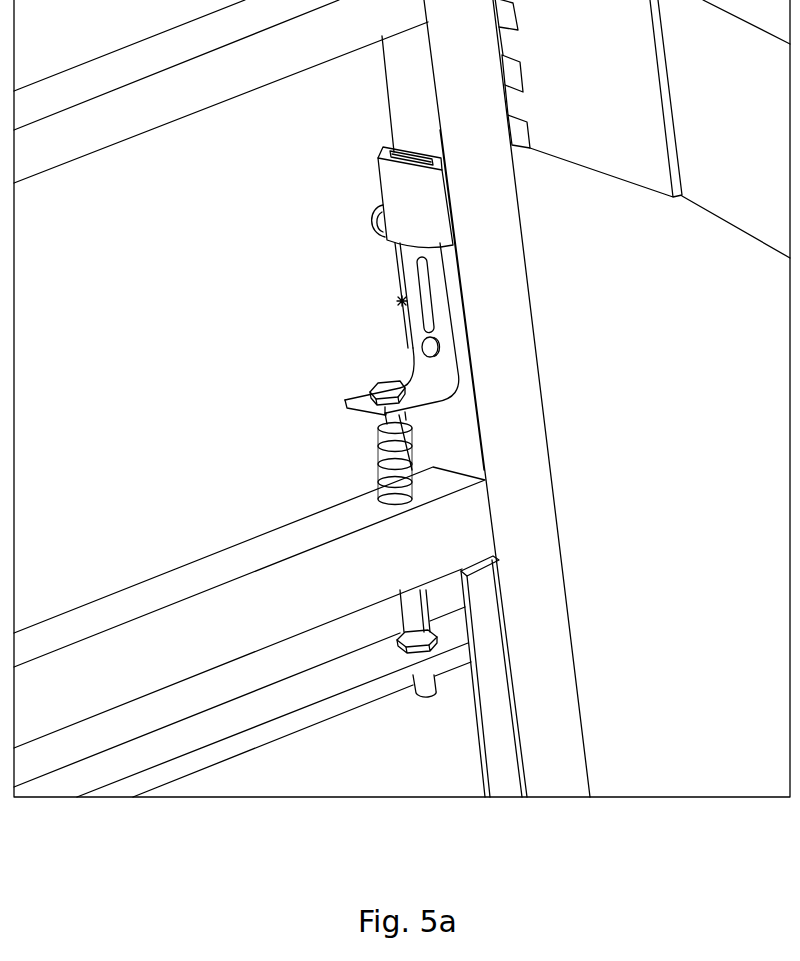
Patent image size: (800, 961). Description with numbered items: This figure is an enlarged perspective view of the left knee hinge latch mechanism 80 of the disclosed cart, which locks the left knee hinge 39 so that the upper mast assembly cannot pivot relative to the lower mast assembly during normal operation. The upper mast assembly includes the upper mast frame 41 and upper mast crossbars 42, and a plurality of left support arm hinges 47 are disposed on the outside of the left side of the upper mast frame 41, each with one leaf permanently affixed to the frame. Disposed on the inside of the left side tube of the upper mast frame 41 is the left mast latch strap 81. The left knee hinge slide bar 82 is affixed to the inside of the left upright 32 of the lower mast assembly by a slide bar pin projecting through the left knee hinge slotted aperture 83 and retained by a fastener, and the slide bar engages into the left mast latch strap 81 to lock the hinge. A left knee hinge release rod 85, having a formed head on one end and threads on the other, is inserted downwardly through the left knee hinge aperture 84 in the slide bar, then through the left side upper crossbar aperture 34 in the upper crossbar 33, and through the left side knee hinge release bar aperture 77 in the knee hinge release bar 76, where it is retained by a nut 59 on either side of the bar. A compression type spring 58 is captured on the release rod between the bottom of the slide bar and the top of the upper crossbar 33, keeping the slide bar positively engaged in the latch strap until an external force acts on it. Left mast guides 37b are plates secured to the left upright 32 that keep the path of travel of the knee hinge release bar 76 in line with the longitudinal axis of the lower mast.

The left upright 32 is at (556, 661).
The upper crossbar 33 is at (470, 538).
The left side upper crossbar aperture 34 is at (392, 497).
The left mast guide 37b is at (458, 722).
The left knee hinge 39 is at (377, 214).
The upper mast frame 41 is at (412, 58).
The upper mast crossbar 42 is at (224, 60).
The left support arm hinge 47 is at (524, 136).
The compression type spring 58 is at (384, 446).
The nut 59 is at (400, 651).
The knee hinge release bar 76 is at (238, 722).
The left side knee hinge release bar aperture 77 is at (405, 653).
The left knee hinge latch mechanism 80 is at (398, 301).
The left mast latch strap 81 is at (437, 218).
The left knee hinge slide bar 82 is at (437, 292).
The left knee hinge slotted aperture 83 is at (437, 318).
The left knee hinge aperture 84 is at (360, 406).
The left knee hinge release rod 85 is at (380, 390).